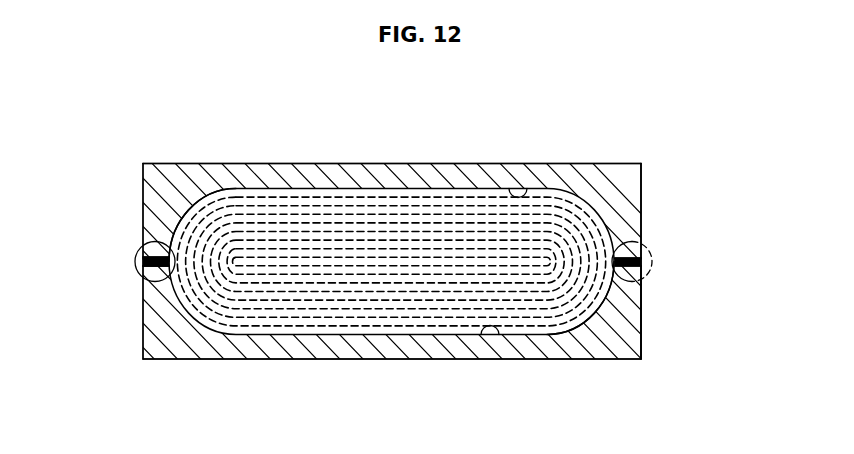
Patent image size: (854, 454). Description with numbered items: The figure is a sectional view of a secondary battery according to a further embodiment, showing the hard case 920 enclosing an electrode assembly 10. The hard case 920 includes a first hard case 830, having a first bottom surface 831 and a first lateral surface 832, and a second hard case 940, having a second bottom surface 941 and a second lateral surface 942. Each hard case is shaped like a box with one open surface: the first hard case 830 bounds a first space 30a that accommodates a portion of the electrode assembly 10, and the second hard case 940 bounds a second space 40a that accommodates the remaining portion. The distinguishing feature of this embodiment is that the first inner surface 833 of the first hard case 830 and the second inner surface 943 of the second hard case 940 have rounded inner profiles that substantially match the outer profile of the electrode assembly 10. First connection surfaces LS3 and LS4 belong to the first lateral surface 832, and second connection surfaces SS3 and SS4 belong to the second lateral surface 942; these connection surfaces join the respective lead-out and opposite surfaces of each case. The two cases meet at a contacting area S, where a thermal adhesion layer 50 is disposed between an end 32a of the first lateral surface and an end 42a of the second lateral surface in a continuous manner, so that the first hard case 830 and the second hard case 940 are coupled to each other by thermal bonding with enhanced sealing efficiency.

The electrode assembly 10 is at (338, 200).
The first space 30a is at (580, 344).
The end of the first lateral surface 32a is at (140, 280).
The second space 40a is at (193, 205).
The end of the second lateral surface 42a is at (140, 257).
The thermal adhesion layer 50 is at (648, 254).
The contacting area S is at (135, 269).
The first hard case 830 is at (652, 316).
The first bottom surface 831 is at (303, 350).
The first lateral surface 832 is at (623, 323).
The first inner surface 833 is at (500, 342).
The hard case 920 is at (747, 212).
The second hard case 940 is at (652, 219).
The second bottom surface 941 is at (422, 172).
The second lateral surface 942 is at (628, 200).
The second inner surface 943 is at (523, 190).
The second connection surface SS3 is at (642, 182).
The second connection surface SS4 is at (143, 192).
The first connection surface LS3 is at (643, 332).
The first connection surface LS4 is at (143, 328).